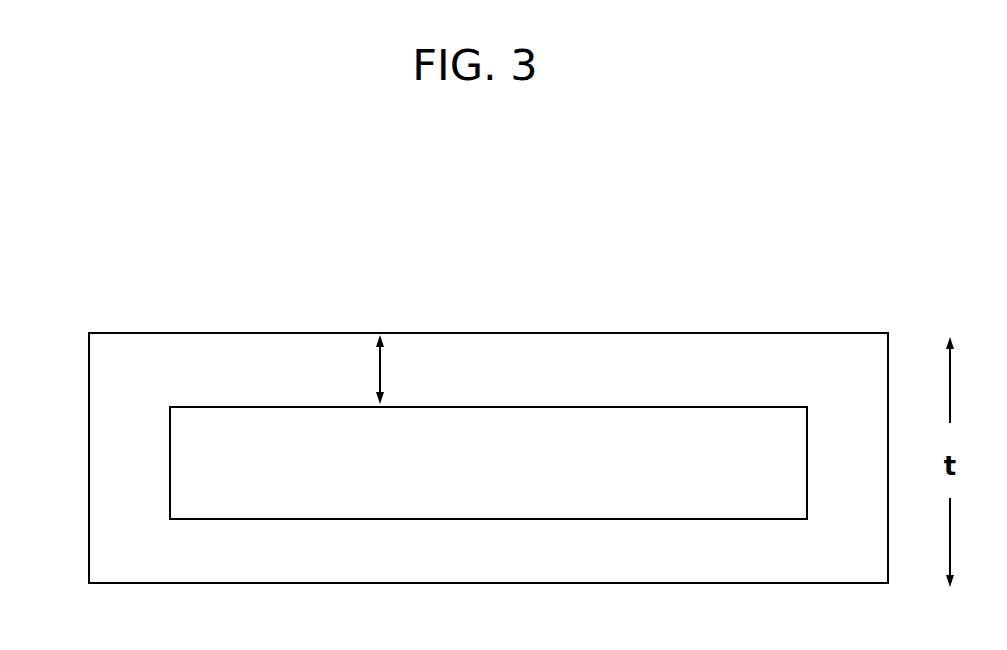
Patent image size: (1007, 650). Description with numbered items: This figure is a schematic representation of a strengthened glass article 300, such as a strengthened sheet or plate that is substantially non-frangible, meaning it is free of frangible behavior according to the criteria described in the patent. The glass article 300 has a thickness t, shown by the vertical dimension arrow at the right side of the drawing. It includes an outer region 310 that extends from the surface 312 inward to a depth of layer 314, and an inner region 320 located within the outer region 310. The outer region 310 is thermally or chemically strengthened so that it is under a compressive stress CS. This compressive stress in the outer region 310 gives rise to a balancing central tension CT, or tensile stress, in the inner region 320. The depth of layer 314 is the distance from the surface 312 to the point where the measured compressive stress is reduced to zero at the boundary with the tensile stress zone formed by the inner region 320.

The strengthened glass article 300 is at (512, 192).
The outer region 310 is at (604, 322).
The surface 312 is at (157, 327).
The depth of layer 314 is at (358, 367).
The inner region 320 is at (488, 463).